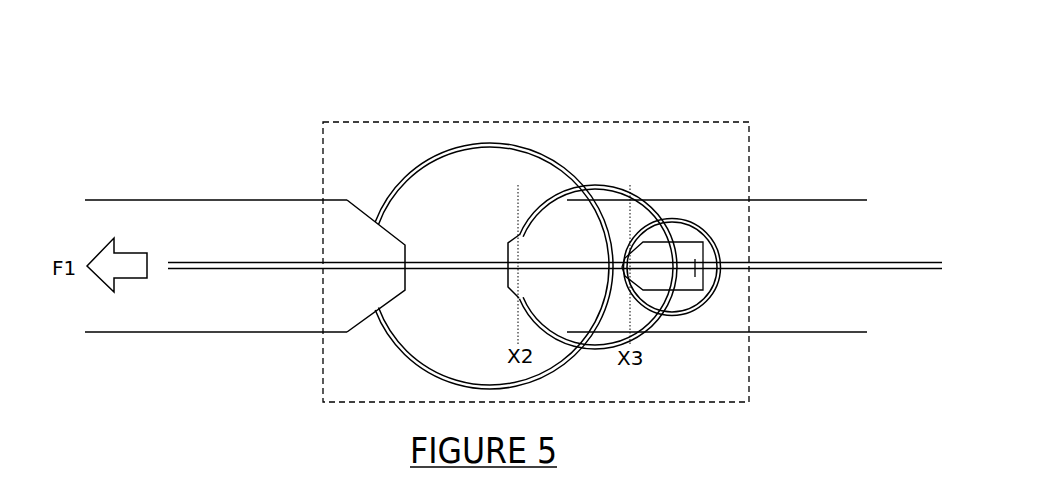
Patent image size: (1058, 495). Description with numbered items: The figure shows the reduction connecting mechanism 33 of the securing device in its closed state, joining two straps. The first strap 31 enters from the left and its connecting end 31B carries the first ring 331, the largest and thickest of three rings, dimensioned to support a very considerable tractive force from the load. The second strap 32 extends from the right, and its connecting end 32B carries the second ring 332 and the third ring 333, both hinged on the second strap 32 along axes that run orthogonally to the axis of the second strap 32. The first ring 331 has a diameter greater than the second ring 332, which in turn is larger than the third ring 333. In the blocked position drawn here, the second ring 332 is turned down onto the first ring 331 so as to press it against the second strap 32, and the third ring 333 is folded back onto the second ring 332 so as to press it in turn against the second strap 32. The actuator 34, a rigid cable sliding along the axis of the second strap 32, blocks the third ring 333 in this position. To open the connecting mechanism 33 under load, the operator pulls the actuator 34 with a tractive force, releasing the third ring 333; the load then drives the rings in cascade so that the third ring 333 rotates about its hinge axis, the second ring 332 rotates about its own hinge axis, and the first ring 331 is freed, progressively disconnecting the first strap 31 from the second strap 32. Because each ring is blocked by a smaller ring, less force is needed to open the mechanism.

The first strap 31 is at (132, 200).
The connecting end of the first strap 31B is at (363, 201).
The second strap 32 is at (797, 199).
The connecting end of the second strap 32B is at (518, 244).
The reduction connecting mechanism 33 is at (745, 121).
The first ring 331 is at (537, 152).
The second ring 332 is at (600, 189).
The third ring 333 is at (678, 218).
The actuator 34 is at (895, 261).